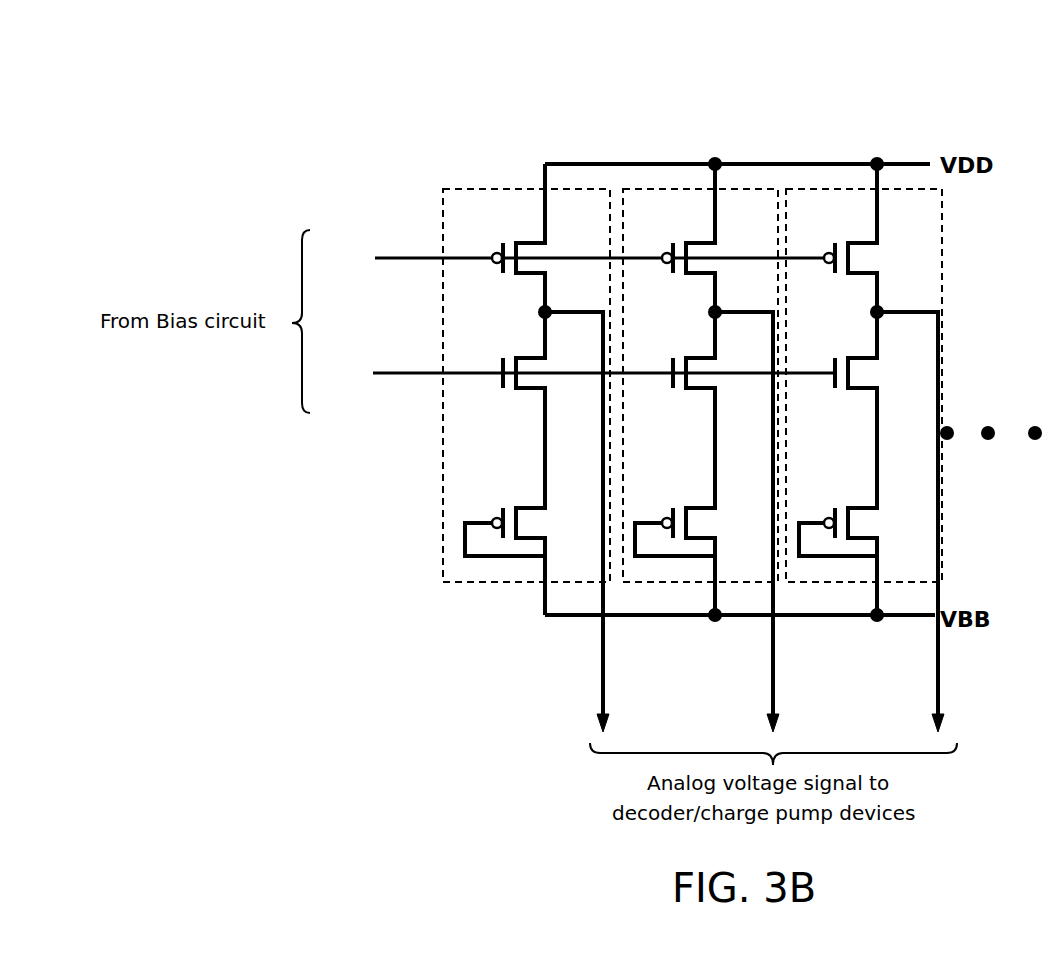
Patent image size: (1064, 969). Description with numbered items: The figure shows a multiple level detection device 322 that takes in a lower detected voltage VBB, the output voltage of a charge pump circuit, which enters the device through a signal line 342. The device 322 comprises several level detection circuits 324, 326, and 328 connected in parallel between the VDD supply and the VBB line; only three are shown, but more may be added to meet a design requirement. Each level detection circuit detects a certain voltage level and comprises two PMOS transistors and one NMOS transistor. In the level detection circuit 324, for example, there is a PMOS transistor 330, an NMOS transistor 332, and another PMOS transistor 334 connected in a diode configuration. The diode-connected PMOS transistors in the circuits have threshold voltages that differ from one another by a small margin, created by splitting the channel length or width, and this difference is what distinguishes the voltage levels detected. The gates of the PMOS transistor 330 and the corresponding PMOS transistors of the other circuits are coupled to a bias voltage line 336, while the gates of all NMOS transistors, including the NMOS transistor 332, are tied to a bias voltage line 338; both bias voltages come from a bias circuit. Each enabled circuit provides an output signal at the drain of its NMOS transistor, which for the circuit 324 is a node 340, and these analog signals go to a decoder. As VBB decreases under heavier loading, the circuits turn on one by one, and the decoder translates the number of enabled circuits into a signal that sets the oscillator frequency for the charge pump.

The multiple level detection device 322 is at (230, 88).
The level detection circuit 324 is at (522, 588).
The level detection circuit 326 is at (697, 583).
The level detection circuit 328 is at (862, 577).
The PMOS transistor 330 is at (492, 253).
The NMOS transistor 332 is at (500, 358).
The PMOS transistor 334 is at (494, 517).
The bias voltage line 336 is at (571, 260).
The bias voltage line 338 is at (576, 375).
The node 340 is at (538, 312).
The signal line 342 is at (565, 617).